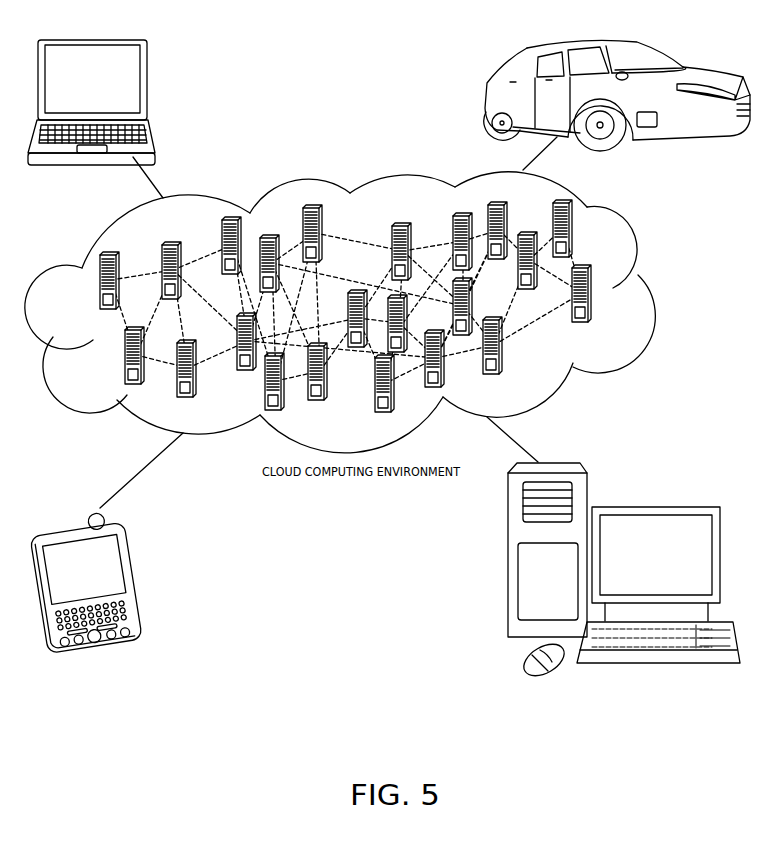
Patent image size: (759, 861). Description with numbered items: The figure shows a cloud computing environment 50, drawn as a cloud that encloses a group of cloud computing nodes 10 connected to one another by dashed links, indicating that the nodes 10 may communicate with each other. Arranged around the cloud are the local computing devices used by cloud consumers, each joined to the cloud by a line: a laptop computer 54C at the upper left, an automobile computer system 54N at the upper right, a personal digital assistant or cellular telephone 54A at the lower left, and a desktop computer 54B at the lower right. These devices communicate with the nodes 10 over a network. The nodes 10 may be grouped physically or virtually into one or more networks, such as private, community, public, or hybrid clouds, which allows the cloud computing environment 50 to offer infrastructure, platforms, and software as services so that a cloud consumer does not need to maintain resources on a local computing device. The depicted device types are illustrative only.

The cloud computing node 10 is at (610, 313).
The cloud computing environment 50 is at (652, 290).
The personal digital assistant (PDA) or cellular telephone 54A is at (135, 577).
The desktop computer 54B is at (663, 489).
The laptop computer 54C is at (147, 82).
The automobile computer system 54N is at (483, 96).